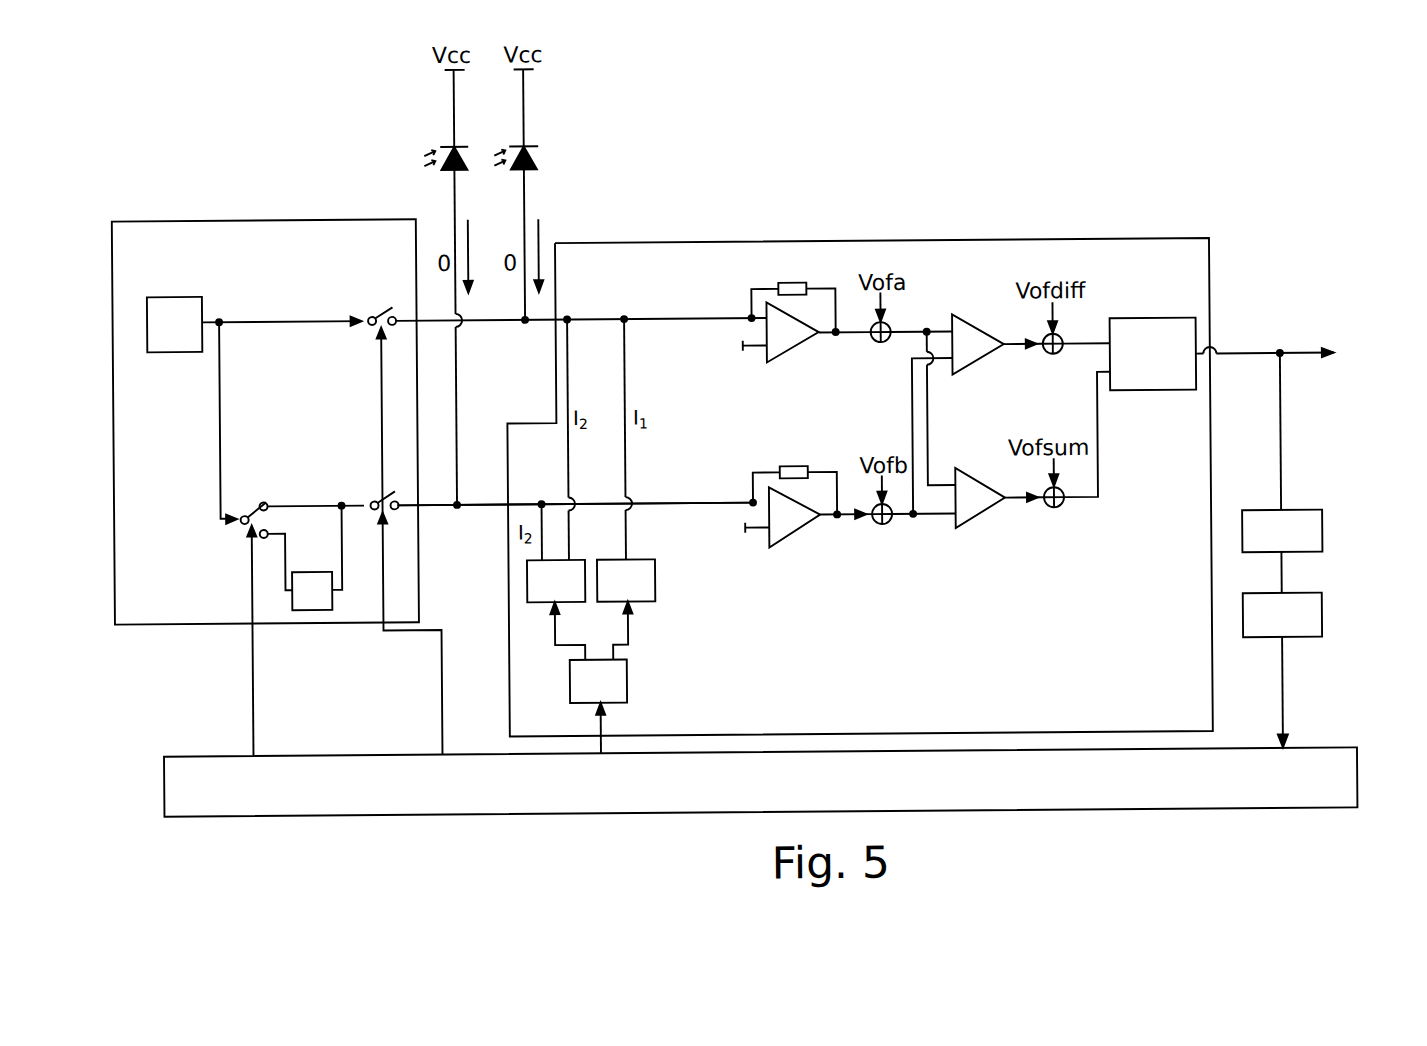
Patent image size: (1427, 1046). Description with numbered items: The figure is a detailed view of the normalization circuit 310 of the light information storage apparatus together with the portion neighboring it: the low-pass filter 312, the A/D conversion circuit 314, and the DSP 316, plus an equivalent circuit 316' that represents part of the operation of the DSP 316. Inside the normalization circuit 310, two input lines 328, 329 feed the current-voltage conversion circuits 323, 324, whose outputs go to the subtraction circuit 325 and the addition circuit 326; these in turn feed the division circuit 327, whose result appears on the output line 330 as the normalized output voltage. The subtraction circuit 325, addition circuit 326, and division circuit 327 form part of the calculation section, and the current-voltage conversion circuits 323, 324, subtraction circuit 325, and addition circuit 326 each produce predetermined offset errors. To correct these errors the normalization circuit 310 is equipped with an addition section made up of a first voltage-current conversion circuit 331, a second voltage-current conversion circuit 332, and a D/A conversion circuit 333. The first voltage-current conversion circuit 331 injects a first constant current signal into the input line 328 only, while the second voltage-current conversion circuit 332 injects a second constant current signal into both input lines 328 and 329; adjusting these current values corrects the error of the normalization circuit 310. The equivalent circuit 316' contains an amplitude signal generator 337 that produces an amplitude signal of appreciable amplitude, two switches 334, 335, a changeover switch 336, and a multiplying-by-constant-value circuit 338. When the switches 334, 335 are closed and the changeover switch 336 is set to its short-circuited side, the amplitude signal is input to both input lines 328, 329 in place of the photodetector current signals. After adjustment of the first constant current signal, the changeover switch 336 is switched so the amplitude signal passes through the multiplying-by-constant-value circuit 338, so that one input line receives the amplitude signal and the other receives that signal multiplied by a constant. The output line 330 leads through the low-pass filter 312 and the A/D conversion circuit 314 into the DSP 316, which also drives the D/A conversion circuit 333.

The equivalent circuit 316' is at (265, 386).
The amplitude signal generator 337 is at (205, 299).
The switch 334 is at (388, 307).
The switch 335 is at (372, 498).
The changeover switch 336 is at (259, 499).
The multiplying-by-constant-value circuit 338 is at (310, 607).
The input line 328 is at (655, 318).
The input line 329 is at (665, 502).
The normalization circuit 310 is at (980, 241).
The current-voltage conversion circuit 323 is at (795, 350).
The current-voltage conversion circuit 324 is at (795, 534).
The subtraction circuit 325 is at (980, 322).
The addition circuit 326 is at (990, 518).
The division circuit 327 is at (1154, 395).
The output line 330 is at (1203, 357).
The first voltage-current conversion circuit 331 is at (655, 580).
The second voltage-current conversion circuit 332 is at (526, 582).
The D/A conversion circuit 333 is at (626, 680).
The low-pass filter 312 is at (1322, 535).
The A/D conversion circuit 314 is at (1321, 619).
The DSP 316 is at (761, 817).